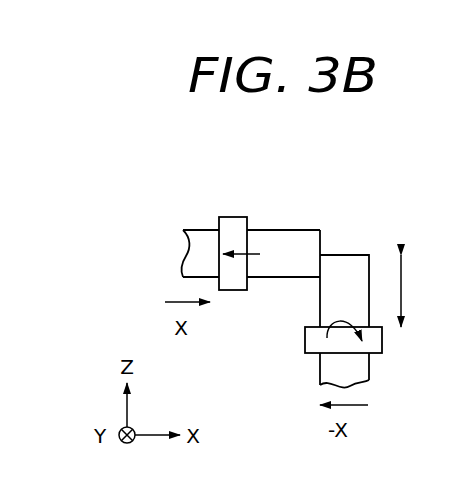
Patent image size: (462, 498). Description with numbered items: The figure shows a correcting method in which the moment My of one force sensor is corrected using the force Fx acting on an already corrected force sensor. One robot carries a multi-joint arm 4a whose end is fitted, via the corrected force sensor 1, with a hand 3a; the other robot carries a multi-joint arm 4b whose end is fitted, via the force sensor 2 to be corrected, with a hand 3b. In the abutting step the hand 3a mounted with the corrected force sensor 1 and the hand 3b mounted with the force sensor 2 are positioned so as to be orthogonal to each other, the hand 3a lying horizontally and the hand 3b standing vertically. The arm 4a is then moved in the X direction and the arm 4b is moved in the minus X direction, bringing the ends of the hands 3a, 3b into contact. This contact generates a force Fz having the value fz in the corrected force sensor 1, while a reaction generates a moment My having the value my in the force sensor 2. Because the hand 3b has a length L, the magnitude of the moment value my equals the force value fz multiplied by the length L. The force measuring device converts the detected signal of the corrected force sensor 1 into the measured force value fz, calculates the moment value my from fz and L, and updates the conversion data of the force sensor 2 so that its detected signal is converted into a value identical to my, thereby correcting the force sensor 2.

The force sensor 1 is at (231, 217).
The force sensor 2 is at (305, 343).
The hand 3a is at (280, 230).
The hand 3b is at (350, 255).
The multi-joint arm 4a is at (200, 230).
The multi-joint arm 4b is at (369, 372).
The value of force Fz fz is at (255, 257).
The value of moment My my is at (365, 338).
The length of hand L is at (412, 291).